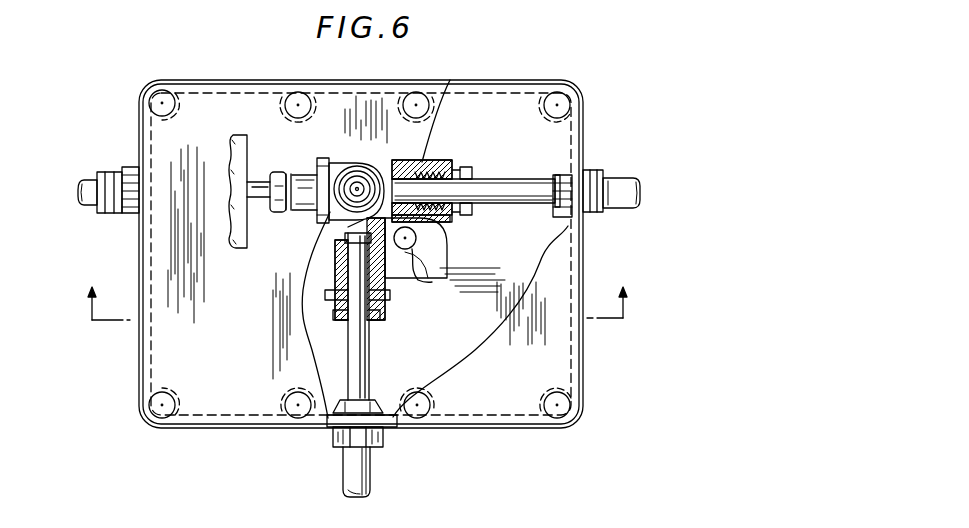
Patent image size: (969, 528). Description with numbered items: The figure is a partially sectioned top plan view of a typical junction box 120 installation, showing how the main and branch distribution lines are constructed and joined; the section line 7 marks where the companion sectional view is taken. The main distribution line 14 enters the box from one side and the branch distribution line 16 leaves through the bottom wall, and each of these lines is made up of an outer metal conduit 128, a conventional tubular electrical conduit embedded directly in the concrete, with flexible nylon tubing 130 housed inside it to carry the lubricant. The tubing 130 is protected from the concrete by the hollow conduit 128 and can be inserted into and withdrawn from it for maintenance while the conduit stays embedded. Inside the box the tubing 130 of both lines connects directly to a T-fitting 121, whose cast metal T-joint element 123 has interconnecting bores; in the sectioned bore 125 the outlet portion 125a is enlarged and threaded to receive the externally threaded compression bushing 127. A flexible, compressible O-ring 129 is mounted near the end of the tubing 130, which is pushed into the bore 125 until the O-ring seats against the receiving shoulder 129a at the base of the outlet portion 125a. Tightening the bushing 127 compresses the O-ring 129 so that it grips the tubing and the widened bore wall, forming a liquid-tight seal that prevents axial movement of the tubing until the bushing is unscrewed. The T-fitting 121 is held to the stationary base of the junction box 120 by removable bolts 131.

The junction box 120 is at (117, 377).
The section line 7- 7 is at (357, 295).
The outer metal conduit 128 is at (108, 178).
The tubing 130 is at (540, 166).
The main distribution line 14 is at (607, 157).
The branch distribution line 16 is at (392, 453).
The T-fitting 121 is at (412, 149).
The compression bushing 127 is at (497, 151).
The O-ring 129 is at (418, 165).
The receiving shoulder 129a is at (426, 166).
The T-joint element 123 is at (436, 163).
The bore 125 is at (432, 259).
The outlet portion 125a is at (428, 232).
The bolts 131 is at (413, 283).